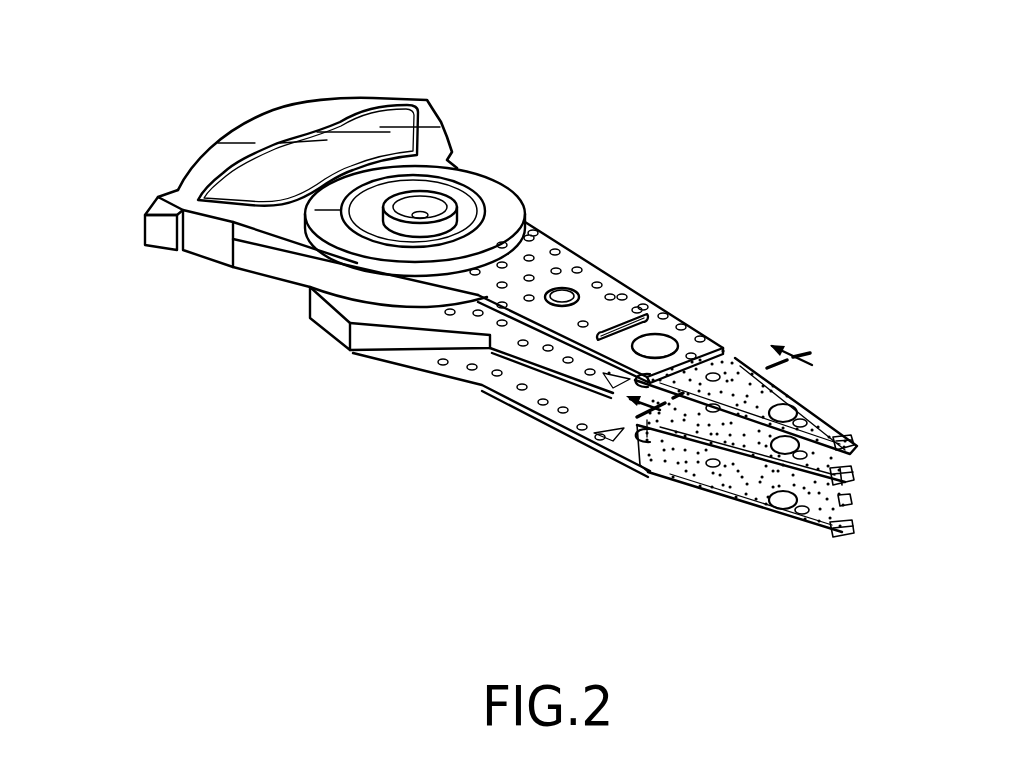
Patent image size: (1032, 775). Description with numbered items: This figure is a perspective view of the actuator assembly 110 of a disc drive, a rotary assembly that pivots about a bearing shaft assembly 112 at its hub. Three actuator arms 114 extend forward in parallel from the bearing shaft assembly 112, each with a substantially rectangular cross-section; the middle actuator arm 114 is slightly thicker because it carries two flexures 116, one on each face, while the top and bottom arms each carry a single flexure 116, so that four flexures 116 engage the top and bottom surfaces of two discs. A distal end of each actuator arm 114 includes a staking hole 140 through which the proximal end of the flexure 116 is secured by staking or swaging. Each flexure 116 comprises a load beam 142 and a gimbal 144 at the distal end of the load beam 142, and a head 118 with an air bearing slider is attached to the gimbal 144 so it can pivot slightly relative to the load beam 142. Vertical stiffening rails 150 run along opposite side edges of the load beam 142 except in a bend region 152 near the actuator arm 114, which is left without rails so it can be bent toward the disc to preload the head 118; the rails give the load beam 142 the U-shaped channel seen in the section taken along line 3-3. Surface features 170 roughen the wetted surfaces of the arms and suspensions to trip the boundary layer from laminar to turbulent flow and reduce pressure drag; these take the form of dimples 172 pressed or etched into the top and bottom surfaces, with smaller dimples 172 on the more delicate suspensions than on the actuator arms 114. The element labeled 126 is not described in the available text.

The actuator assembly 110 is at (165, 120).
The bearing shaft assembly 112 is at (420, 215).
The actuator arm 114 is at (600, 270).
The flexure 116 is at (822, 404).
The head 118 is at (840, 466).
The actuator body / E-block 126 is at (358, 100).
The staking hole 140 is at (640, 352).
The load beam 142 is at (753, 490).
The gimbal 144 is at (843, 537).
The stiffening rails 150 is at (712, 490).
The bend region 152 is at (660, 493).
The surface features 170 is at (555, 250).
The dimples 172 is at (730, 362).
The section line 3- 3 is at (725, 382).